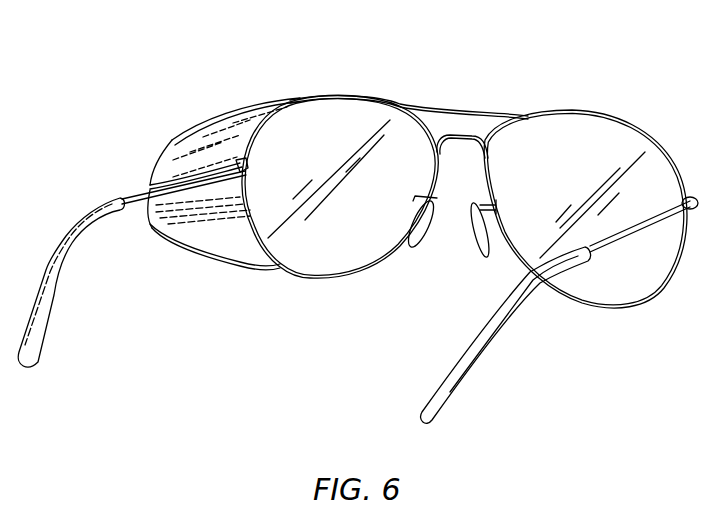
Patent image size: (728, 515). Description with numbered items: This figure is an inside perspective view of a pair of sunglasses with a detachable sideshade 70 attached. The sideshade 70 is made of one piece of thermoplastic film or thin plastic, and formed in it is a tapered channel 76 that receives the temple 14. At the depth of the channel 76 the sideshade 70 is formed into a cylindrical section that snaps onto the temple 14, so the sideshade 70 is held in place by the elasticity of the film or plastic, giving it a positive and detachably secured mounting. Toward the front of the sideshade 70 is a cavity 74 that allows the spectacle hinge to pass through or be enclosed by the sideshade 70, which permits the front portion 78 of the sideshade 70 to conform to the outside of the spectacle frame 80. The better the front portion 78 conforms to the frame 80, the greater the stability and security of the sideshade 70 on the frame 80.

The temple 14 is at (129, 192).
The sideshade 70 is at (190, 238).
The cavity 74 is at (241, 160).
The tapered channel 76 is at (186, 178).
The front portion 78 is at (275, 100).
The spectacle frame 80 is at (313, 97).